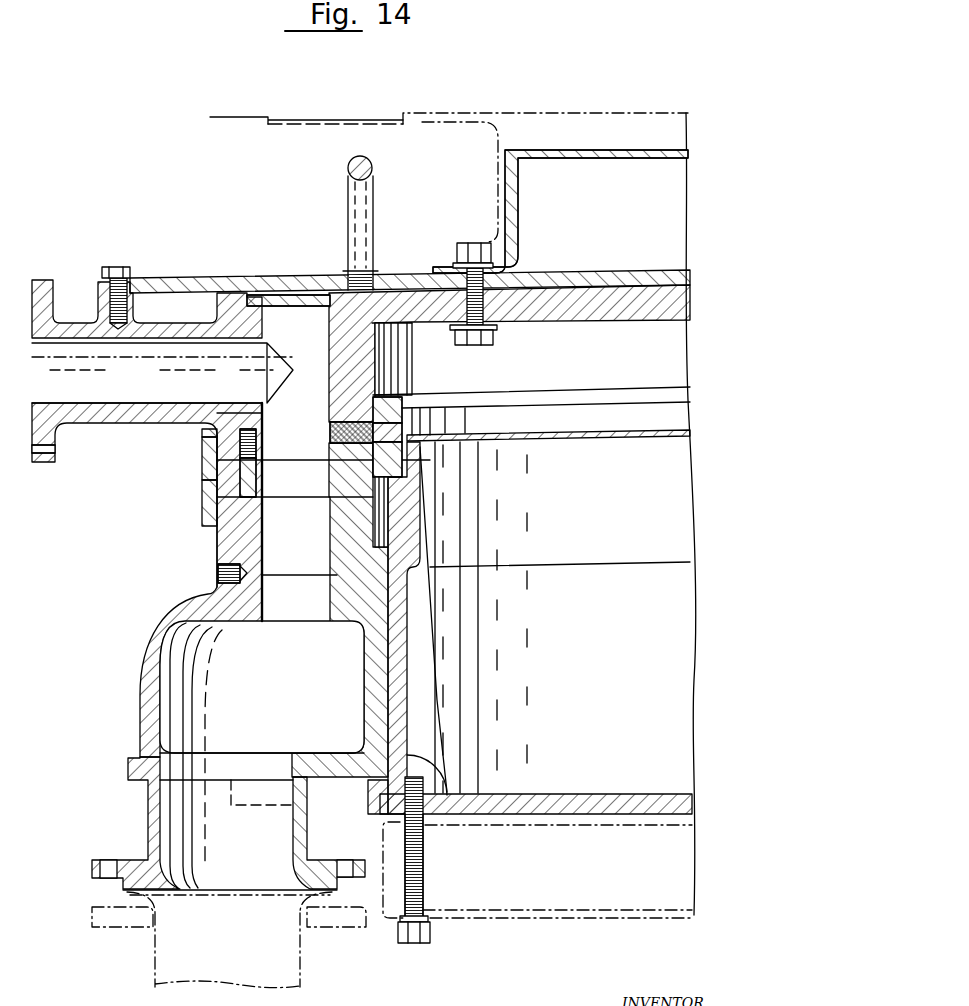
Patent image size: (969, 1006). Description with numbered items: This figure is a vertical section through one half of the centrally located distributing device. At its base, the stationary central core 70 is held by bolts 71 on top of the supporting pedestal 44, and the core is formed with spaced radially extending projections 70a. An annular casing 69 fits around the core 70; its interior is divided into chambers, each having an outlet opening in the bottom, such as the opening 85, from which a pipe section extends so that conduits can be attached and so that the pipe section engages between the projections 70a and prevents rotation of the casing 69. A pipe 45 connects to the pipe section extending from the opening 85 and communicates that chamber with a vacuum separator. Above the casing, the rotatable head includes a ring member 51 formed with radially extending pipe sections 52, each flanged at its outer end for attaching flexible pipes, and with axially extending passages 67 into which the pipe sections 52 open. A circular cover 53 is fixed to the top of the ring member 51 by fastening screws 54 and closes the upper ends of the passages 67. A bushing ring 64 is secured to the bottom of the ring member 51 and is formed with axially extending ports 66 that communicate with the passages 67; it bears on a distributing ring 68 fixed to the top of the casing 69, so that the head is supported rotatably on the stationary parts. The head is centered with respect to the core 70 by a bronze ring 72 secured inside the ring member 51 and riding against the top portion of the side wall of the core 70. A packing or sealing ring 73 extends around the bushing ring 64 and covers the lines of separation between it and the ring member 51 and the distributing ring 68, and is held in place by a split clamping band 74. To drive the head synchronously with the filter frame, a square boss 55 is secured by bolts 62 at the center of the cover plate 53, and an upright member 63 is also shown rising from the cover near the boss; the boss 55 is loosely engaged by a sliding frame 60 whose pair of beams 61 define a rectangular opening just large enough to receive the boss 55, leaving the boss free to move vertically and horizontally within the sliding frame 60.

The sliding frame 60 is at (404, 113).
The beams 61 is at (497, 150).
The square boss 55 is at (518, 218).
The bolts 62 is at (474, 244).
The stud 63 is at (355, 211).
The circular cover 53 is at (288, 280).
The ring member 51 is at (228, 296).
The fastening screws 54 is at (119, 266).
The radially extending pipe sections 52 is at (56, 306).
The ring 72 is at (396, 403).
The axially extending passages 67 is at (203, 433).
The packing or sealing ring 73 is at (215, 446).
The bushing ring 64 is at (270, 478).
The axially extending ports 66 is at (256, 482).
The split clamping band 74 is at (203, 513).
The distributing ring 68 is at (228, 550).
The annular casing 69 is at (150, 657).
The stationary central core 70 is at (400, 648).
The radially extending projections 70a is at (352, 800).
The opening 85 is at (178, 767).
The pipe 45 is at (157, 952).
The supporting pedestal 44 is at (393, 915).
The bolts 71 is at (432, 936).